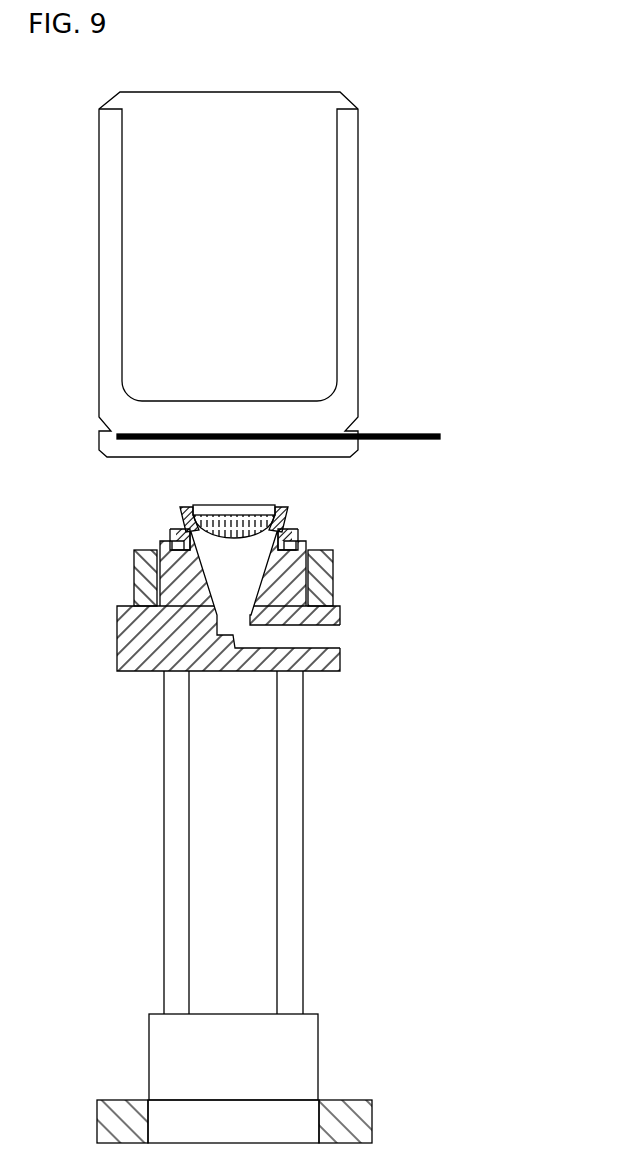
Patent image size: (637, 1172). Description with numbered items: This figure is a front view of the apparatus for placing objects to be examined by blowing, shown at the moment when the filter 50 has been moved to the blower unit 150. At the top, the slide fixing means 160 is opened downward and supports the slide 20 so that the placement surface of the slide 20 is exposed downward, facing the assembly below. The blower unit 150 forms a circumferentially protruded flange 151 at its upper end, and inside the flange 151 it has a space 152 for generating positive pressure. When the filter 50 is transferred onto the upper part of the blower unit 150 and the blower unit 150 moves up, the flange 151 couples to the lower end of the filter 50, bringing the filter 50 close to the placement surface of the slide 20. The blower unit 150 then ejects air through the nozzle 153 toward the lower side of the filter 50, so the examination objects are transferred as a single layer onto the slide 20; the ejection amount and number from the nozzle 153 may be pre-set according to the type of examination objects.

The slide fixing means 160 is at (358, 199).
The slide 20 is at (415, 434).
The blower unit 150 is at (293, 587).
The circumferentially protruded flange 151 is at (188, 530).
The space 152 is at (231, 575).
The nozzle 153 is at (293, 535).
The filter 50 is at (287, 511).